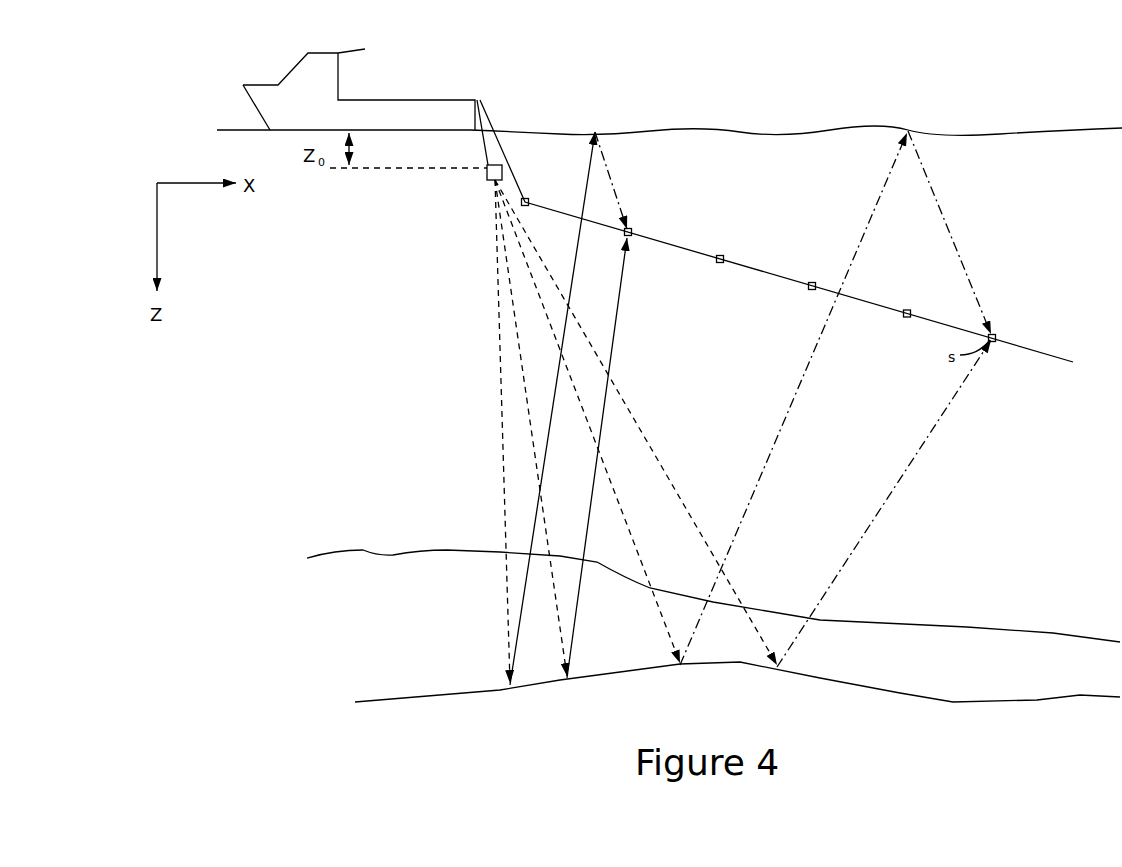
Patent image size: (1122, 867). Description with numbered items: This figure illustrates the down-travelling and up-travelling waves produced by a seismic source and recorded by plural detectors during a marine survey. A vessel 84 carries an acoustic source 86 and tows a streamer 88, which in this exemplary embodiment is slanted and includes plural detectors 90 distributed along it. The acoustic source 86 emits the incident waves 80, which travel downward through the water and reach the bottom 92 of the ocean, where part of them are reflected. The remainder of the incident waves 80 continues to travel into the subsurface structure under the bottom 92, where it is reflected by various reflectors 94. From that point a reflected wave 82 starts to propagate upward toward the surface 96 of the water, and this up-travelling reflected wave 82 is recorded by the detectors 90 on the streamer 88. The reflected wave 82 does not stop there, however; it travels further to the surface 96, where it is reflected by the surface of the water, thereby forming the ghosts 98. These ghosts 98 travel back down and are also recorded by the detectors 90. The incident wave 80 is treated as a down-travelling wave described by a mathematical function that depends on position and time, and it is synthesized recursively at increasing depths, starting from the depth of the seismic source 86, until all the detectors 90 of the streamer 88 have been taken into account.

The incident waves 80 is at (498, 363).
The reflected wave 82 is at (592, 493).
The vessel 84 is at (272, 100).
The acoustic source 86 is at (485, 172).
The streamer 88 is at (752, 266).
The detectors 90 is at (525, 198).
The bottom 92 is at (967, 627).
The reflectors 94 is at (900, 695).
The surface 96 is at (1048, 128).
The ghosts 98 is at (611, 178).